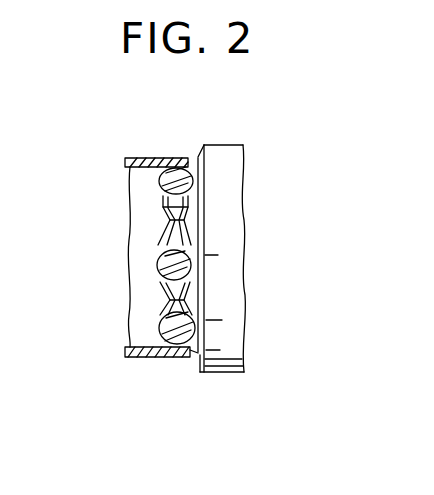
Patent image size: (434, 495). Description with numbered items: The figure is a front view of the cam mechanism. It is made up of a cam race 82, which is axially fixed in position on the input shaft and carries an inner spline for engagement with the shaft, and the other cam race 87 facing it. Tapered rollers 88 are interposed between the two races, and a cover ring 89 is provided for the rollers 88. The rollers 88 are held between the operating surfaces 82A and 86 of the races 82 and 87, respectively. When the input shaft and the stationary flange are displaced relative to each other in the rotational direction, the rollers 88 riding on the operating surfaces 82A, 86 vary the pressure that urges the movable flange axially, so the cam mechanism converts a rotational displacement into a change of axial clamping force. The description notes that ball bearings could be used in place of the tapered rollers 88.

The cam race 82 is at (140, 202).
The operating surface 82A is at (165, 242).
The operating surface 86 is at (200, 234).
The cam race 87 is at (233, 197).
The tapered rollers 88 is at (178, 165).
The cover ring 89 is at (138, 158).